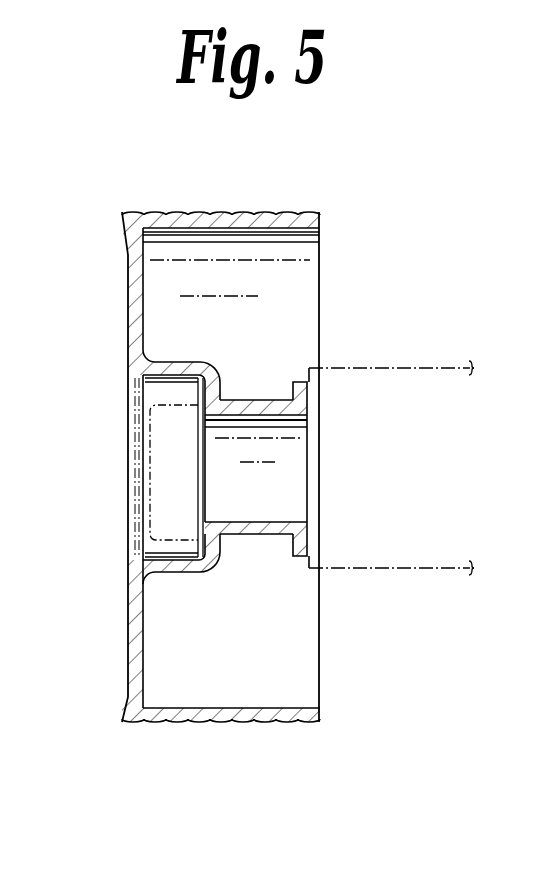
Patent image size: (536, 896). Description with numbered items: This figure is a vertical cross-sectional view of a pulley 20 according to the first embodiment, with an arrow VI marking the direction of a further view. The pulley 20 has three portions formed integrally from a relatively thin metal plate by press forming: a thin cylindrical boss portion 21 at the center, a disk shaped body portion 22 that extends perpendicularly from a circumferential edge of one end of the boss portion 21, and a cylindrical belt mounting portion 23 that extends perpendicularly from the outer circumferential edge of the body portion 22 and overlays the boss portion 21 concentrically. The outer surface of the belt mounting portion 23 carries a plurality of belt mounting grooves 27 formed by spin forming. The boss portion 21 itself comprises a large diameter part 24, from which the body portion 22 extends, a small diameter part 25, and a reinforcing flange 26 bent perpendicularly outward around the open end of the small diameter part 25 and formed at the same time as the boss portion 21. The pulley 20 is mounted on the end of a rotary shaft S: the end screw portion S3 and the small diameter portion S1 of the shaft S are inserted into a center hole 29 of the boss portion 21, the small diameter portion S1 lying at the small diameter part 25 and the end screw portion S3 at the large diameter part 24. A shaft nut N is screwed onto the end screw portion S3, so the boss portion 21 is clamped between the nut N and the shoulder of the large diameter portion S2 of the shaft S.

The pulley 20 is at (332, 244).
The boss portion 21 is at (228, 400).
The body portion 22 is at (128, 293).
The belt mounting portion 23 is at (205, 212).
The large diameter part 24 is at (168, 362).
The small diameter part 25 is at (272, 400).
The reinforcing flange 26 is at (300, 394).
The belt mounting grooves 27 is at (292, 212).
The center hole 29 is at (300, 520).
The shaft nut N is at (156, 399).
The rotary shaft S is at (398, 585).
The small diameter portion S1 is at (250, 492).
The large diameter portion S2 is at (412, 390).
The end screw portion S3 is at (145, 486).
The section view direction VI is at (365, 465).